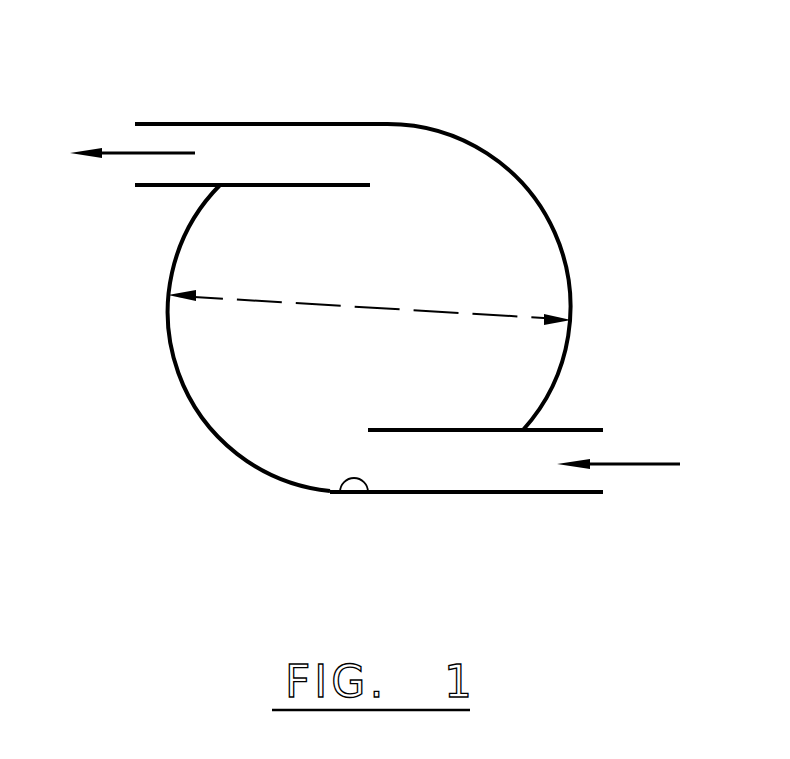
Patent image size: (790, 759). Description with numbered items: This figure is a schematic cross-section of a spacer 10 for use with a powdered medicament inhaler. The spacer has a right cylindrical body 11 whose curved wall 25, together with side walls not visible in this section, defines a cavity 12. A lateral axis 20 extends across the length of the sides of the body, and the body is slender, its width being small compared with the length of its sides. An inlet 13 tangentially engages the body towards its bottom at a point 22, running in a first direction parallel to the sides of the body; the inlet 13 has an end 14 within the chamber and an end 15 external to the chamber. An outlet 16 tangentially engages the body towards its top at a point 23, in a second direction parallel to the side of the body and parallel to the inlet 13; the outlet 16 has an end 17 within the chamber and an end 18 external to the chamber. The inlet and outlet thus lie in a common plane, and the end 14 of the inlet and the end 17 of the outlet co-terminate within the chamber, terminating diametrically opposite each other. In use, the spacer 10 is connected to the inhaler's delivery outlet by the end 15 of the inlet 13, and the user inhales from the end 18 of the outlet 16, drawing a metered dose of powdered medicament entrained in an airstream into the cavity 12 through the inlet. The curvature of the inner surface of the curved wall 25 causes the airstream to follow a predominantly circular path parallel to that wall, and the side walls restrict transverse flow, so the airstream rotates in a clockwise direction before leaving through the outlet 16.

The spacer 10 is at (510, 152).
The right cylindrical body 11 is at (571, 272).
The cavity 12 is at (480, 267).
The inlet 13 is at (468, 494).
The end of inlet within the chamber 14 is at (400, 430).
The end of inlet external to the chamber 15 is at (563, 494).
The outlet 16 is at (199, 124).
The end of outlet within the chamber 17 is at (350, 186).
The end of outlet external to the chamber 18 is at (167, 185).
The lateral axis 20 is at (167, 295).
The point of tangential engagement of inlet 22 is at (346, 480).
The point of tangential engagement of outlet 23 is at (372, 124).
The curved wall 25 is at (182, 378).